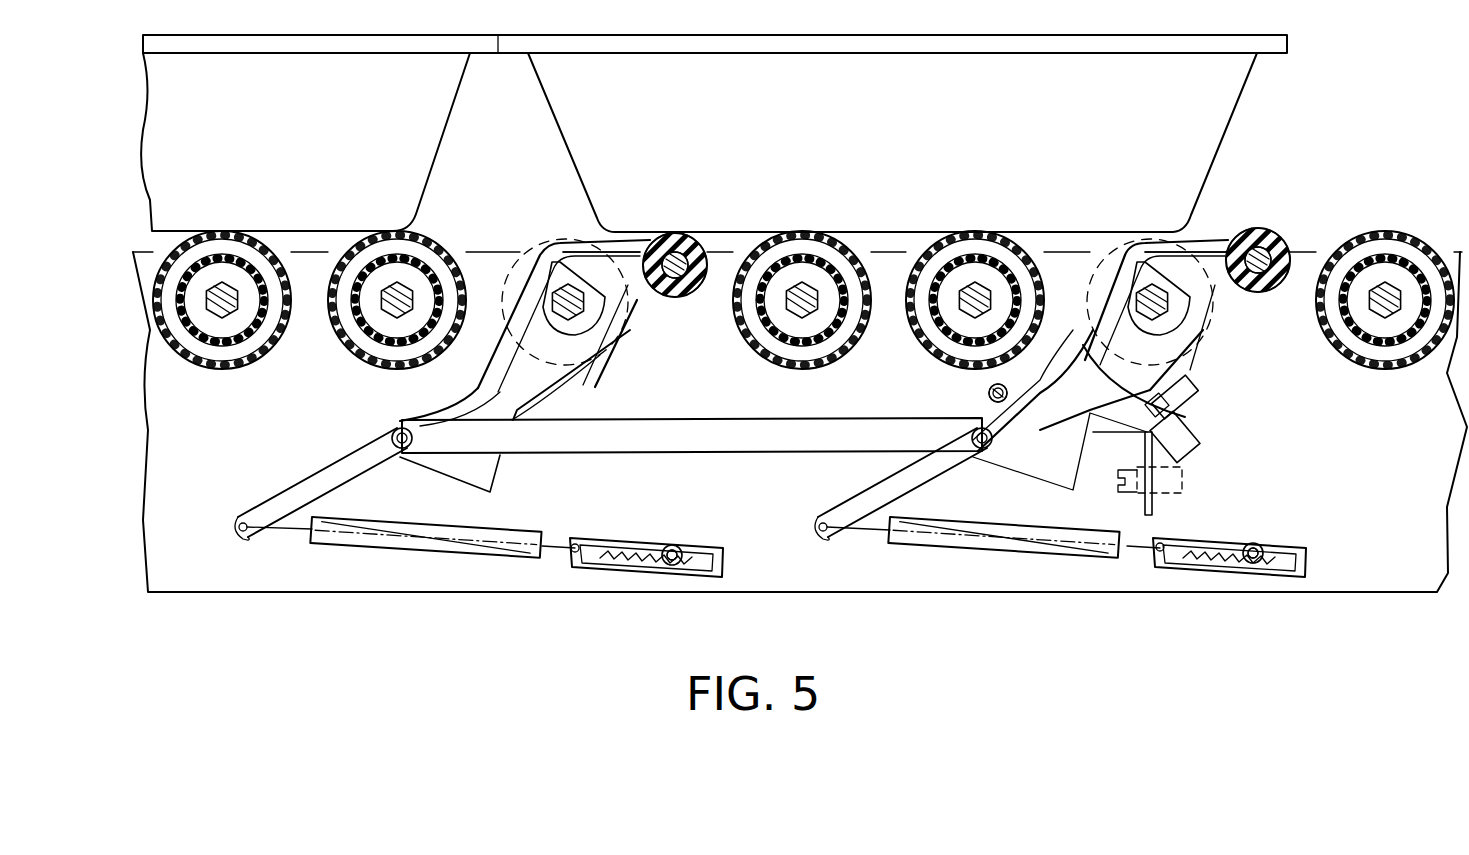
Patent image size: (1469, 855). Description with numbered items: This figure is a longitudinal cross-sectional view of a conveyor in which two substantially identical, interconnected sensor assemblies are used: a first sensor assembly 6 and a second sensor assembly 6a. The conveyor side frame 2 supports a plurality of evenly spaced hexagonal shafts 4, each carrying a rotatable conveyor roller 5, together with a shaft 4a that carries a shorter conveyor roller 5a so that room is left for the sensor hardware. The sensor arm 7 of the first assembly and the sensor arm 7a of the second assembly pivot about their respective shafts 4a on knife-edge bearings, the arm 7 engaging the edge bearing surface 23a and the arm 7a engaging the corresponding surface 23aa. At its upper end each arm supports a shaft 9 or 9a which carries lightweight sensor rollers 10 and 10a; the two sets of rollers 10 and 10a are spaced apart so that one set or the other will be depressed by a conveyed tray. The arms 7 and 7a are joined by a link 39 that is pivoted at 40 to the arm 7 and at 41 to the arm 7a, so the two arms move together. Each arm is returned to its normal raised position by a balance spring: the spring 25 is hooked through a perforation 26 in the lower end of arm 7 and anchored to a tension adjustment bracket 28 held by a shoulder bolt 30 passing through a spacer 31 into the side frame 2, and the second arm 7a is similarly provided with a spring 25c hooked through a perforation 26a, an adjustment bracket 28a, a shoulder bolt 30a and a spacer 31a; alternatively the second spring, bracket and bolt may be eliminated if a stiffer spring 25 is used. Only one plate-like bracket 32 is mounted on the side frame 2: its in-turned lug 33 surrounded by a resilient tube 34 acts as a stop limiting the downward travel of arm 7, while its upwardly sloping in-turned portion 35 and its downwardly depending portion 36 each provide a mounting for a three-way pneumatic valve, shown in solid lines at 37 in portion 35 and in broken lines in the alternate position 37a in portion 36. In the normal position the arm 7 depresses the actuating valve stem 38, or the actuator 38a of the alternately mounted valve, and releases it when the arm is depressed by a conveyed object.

The conveyor side frame 2 is at (1373, 460).
The shaft 4 is at (390, 302).
The shaft 4a is at (575, 322).
The conveyor roller 5 is at (345, 350).
The conveyor roller 5a is at (615, 390).
The sensor assembly 6 is at (1290, 236).
The second sensor assembly 6a is at (700, 240).
The sensor arm 7 is at (845, 487).
The sensor arm 7a is at (325, 450).
The shaft 9 is at (1262, 280).
The roller 9a is at (672, 240).
The sensor roller 10 is at (1262, 230).
The sensor roller 10a is at (690, 292).
The edge bearing surface 23a is at (1130, 245).
The lifter bracket 23aa is at (556, 262).
The balance spring 25 is at (1000, 540).
The spring 25c is at (415, 545).
The perforation 26 is at (815, 530).
The pivot pin 26a is at (237, 525).
The tension adjustment bracket 28 is at (1170, 562).
The tension adjustment bracket 28a is at (575, 562).
The shoulder bolt 30 is at (1262, 552).
The shoulder bolt 30a is at (680, 552).
The spacer 31 is at (1255, 545).
The pawl 31a is at (670, 545).
The bracket 32 is at (1047, 381).
The in-turned lug 33 is at (990, 396).
The tubular segment 34 is at (990, 390).
The in-turned portion 35 is at (1200, 416).
The downwardly depending portion 36 is at (1153, 510).
The three-way pneumatic valve 37 is at (1195, 440).
The pneumatic valve 37a is at (1183, 478).
The actuating valve stem 38 is at (1196, 392).
The actuator valve stem 38a is at (1120, 490).
The link 39 is at (725, 421).
The pivot 40 is at (978, 450).
The pivot 41 is at (395, 430).